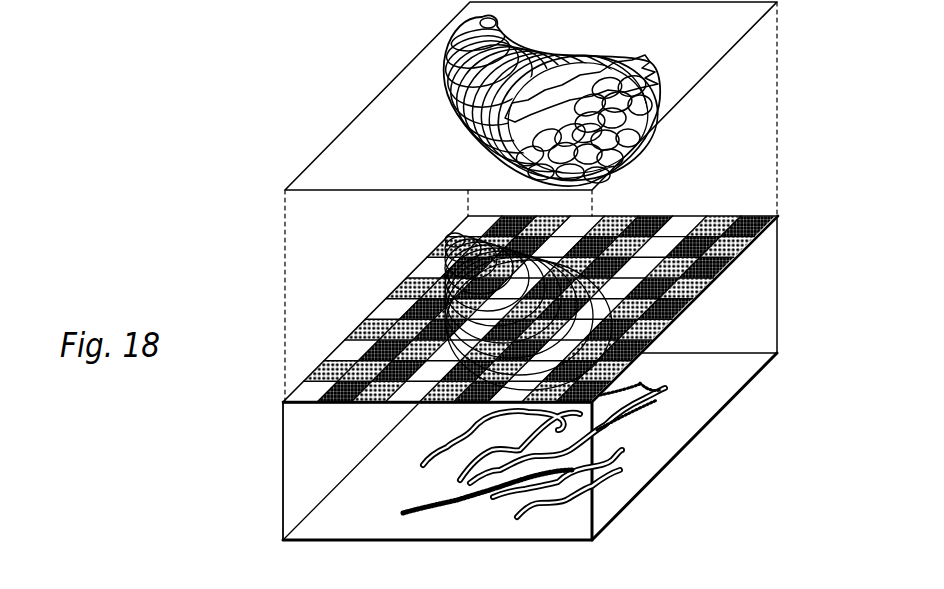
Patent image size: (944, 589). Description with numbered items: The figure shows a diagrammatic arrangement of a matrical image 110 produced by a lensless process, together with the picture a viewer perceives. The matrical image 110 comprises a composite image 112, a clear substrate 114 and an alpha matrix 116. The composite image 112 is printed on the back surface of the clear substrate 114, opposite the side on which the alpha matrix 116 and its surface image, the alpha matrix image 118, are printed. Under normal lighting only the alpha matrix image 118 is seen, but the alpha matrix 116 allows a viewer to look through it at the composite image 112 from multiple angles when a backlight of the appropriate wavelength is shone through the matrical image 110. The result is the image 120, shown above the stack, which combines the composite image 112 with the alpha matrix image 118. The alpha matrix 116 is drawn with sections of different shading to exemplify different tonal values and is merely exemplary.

The matrical image 110 is at (258, 380).
The composite image 112 is at (158, 0).
The clear substrate 114 is at (652, 468).
The alpha matrix 116 is at (407, 290).
The alpha matrix image 118 is at (668, 248).
The image 120 is at (403, 103).